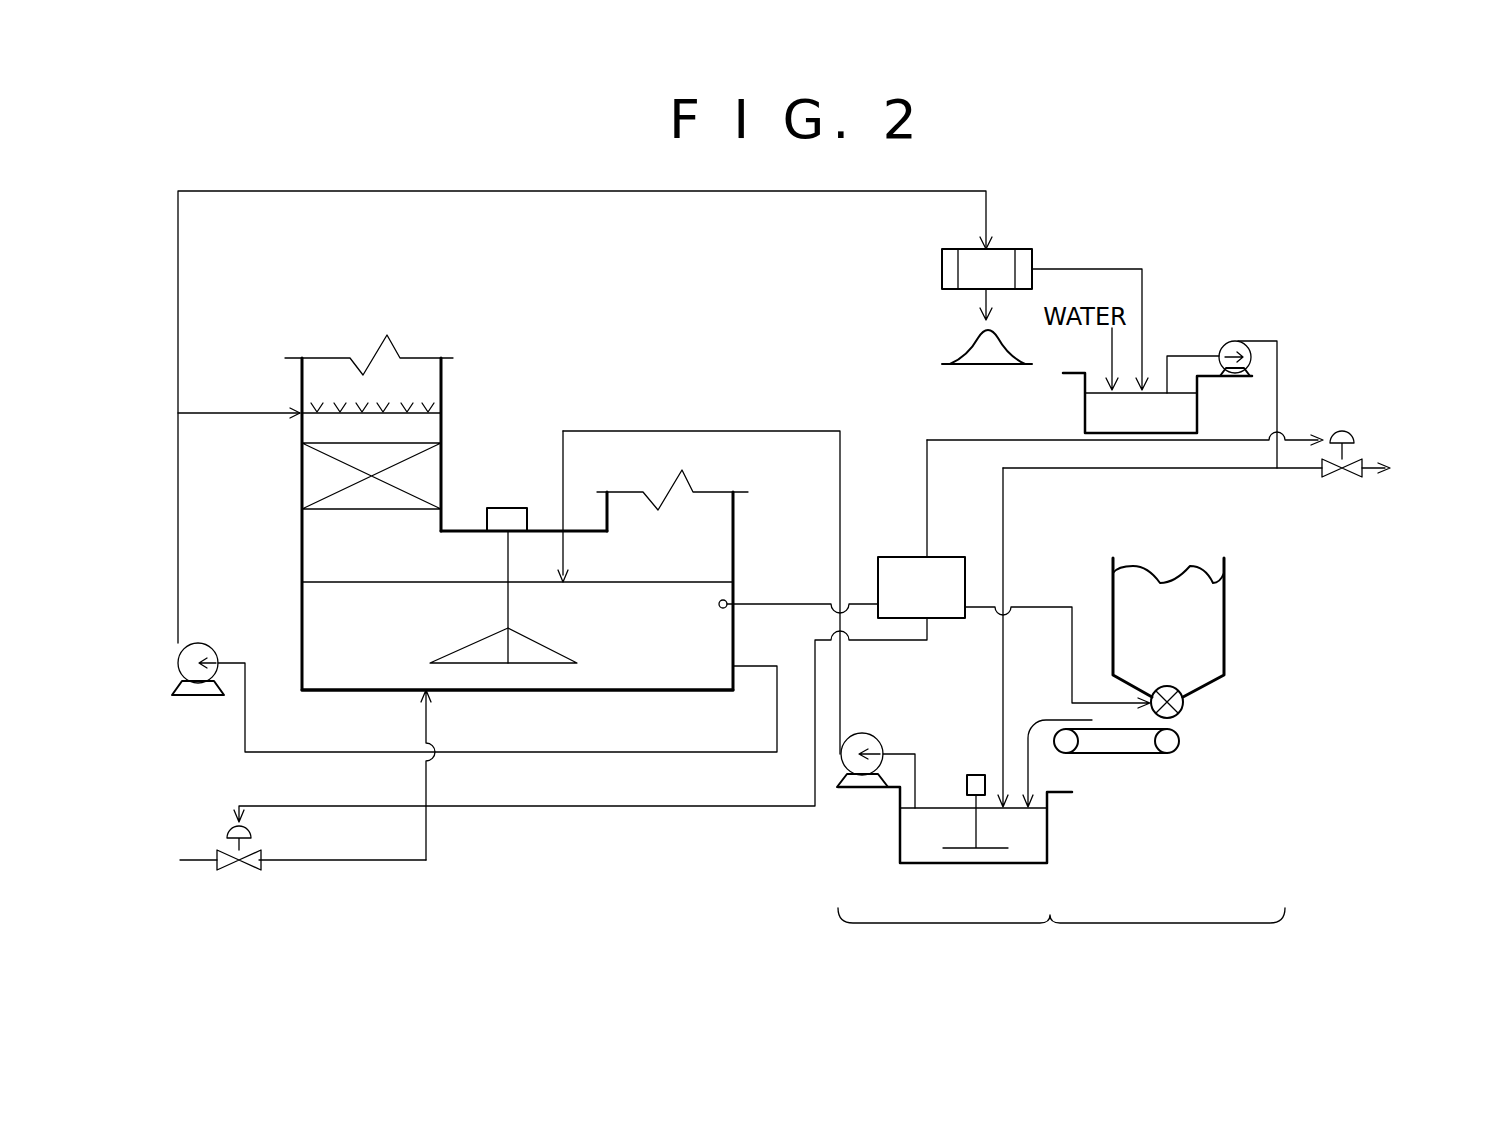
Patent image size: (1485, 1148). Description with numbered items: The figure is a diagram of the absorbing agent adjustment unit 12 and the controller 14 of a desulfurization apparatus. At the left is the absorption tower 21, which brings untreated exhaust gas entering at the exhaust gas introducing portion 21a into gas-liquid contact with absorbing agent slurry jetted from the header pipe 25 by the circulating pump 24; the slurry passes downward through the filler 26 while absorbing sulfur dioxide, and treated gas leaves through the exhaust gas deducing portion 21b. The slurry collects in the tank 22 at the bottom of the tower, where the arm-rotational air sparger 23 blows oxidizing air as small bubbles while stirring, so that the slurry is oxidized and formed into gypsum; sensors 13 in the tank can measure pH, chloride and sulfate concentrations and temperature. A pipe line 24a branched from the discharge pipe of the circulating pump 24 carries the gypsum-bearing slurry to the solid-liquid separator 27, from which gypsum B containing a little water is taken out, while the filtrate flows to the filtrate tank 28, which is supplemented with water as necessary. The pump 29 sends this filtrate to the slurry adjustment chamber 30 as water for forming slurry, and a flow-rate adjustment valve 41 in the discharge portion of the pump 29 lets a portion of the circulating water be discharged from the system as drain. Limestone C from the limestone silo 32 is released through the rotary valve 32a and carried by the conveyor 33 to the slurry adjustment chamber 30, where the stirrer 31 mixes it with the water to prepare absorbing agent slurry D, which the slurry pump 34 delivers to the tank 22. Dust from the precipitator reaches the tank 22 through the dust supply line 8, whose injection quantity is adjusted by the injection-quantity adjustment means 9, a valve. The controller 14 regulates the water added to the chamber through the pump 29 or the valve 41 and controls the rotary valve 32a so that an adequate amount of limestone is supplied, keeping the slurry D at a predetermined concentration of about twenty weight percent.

The dust supply line 8 is at (350, 862).
The injection-quantity adjustment means 9 is at (248, 872).
The absorbing agent adjustment unit 12 is at (1061, 939).
The sensors 13 is at (728, 608).
The controller 14 is at (897, 557).
The absorption tower 21 is at (302, 555).
The exhaust gas introducing portion 21a is at (441, 383).
The exhaust gas deducing portion 21b is at (733, 555).
The tank 22 is at (648, 692).
The arm-rotational air sparger 23 is at (555, 666).
The circulating pump 24 is at (212, 645).
The pipe line 24a is at (607, 192).
The header pipe 25 is at (418, 414).
The filler 26 is at (302, 468).
The solid-liquid separator 27 is at (942, 268).
The filtrate tank 28 is at (1085, 410).
The pump 29 is at (1240, 342).
The slurry adjustment chamber 30 is at (1048, 845).
The stirrer 31 is at (1000, 850).
The limestone silo 32 is at (1225, 636).
The rotary valve 32a is at (1183, 706).
The conveyor 33 is at (1153, 755).
The slurry pump 34 is at (870, 734).
The flow-rate adjustment valve 41 is at (1338, 480).
The gypsum B is at (958, 351).
The limestone C is at (1163, 581).
The absorbing agent slurry D is at (900, 838).